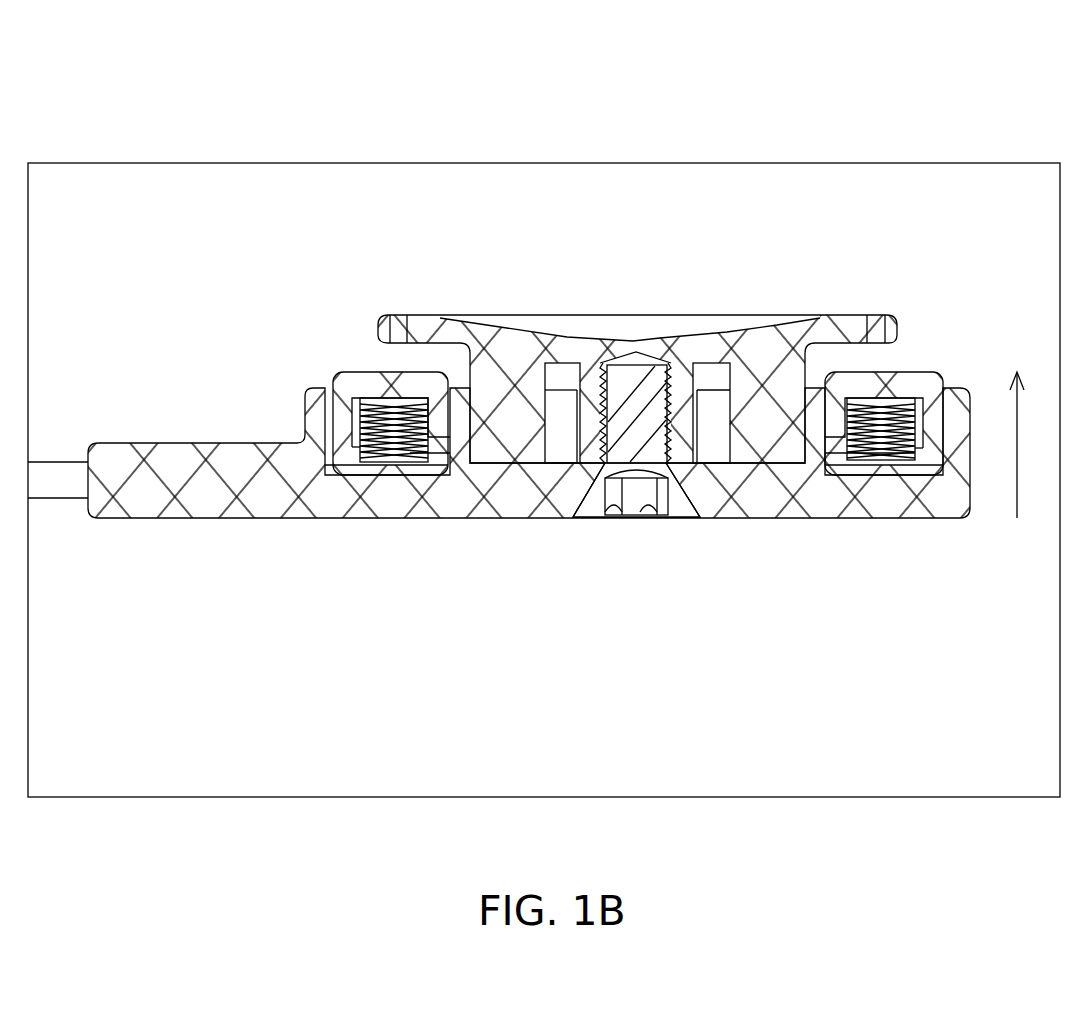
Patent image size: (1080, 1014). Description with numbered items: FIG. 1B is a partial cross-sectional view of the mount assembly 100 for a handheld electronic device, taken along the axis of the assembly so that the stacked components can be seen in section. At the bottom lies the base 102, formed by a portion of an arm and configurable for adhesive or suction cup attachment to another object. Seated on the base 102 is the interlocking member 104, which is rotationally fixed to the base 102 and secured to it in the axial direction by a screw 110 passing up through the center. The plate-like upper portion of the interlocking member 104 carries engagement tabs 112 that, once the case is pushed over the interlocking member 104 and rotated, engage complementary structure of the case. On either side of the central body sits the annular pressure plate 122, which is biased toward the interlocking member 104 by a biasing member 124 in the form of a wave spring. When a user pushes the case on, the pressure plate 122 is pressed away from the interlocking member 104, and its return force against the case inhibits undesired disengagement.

The mount assembly 100 is at (432, 163).
The base 102 is at (872, 519).
The interlocking member 104 is at (672, 317).
The screw 110 is at (584, 519).
The engagement tabs 112 is at (517, 316).
The pressure plate 122 is at (350, 373).
The biasing member 124 is at (365, 485).